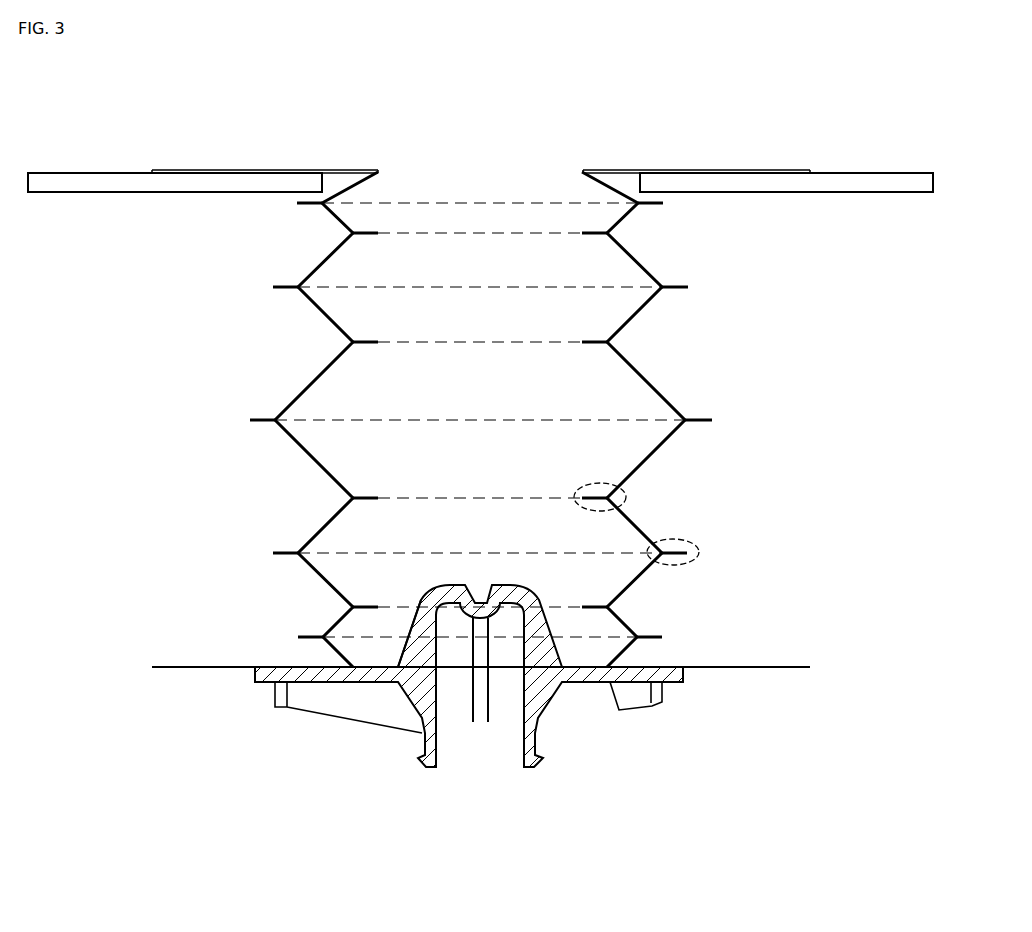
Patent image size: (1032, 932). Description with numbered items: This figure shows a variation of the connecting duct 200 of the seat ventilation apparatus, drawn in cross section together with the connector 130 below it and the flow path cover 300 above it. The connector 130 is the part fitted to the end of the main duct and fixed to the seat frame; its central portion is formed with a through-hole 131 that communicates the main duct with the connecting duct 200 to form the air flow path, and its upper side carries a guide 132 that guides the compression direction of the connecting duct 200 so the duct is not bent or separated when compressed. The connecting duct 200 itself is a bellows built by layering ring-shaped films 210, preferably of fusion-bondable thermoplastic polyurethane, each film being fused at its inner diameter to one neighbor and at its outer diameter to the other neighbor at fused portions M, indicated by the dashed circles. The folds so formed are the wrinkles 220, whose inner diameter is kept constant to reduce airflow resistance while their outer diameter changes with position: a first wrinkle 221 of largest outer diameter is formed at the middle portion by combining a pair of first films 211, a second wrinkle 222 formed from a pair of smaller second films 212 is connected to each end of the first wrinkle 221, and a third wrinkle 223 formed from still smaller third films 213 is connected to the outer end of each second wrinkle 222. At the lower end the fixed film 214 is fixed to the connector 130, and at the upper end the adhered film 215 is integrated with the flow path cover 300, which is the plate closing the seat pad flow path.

The connector 130 is at (545, 692).
The through-hole 131 is at (510, 682).
The guide 132 is at (423, 627).
The connecting duct 200 is at (734, 420).
The film 210 is at (601, 529).
The first film 211 is at (293, 440).
The second film 212 is at (322, 312).
The third film 213 is at (338, 222).
The fixed film 214 is at (765, 665).
The adhered film 215 is at (620, 172).
The wrinkle 220 is at (708, 545).
The first wrinkle 221 is at (694, 438).
The second wrinkle 222 is at (650, 324).
The third wrinkle 223 is at (650, 219).
The flow path cover 300 is at (880, 182).
The fused portion M is at (680, 540).